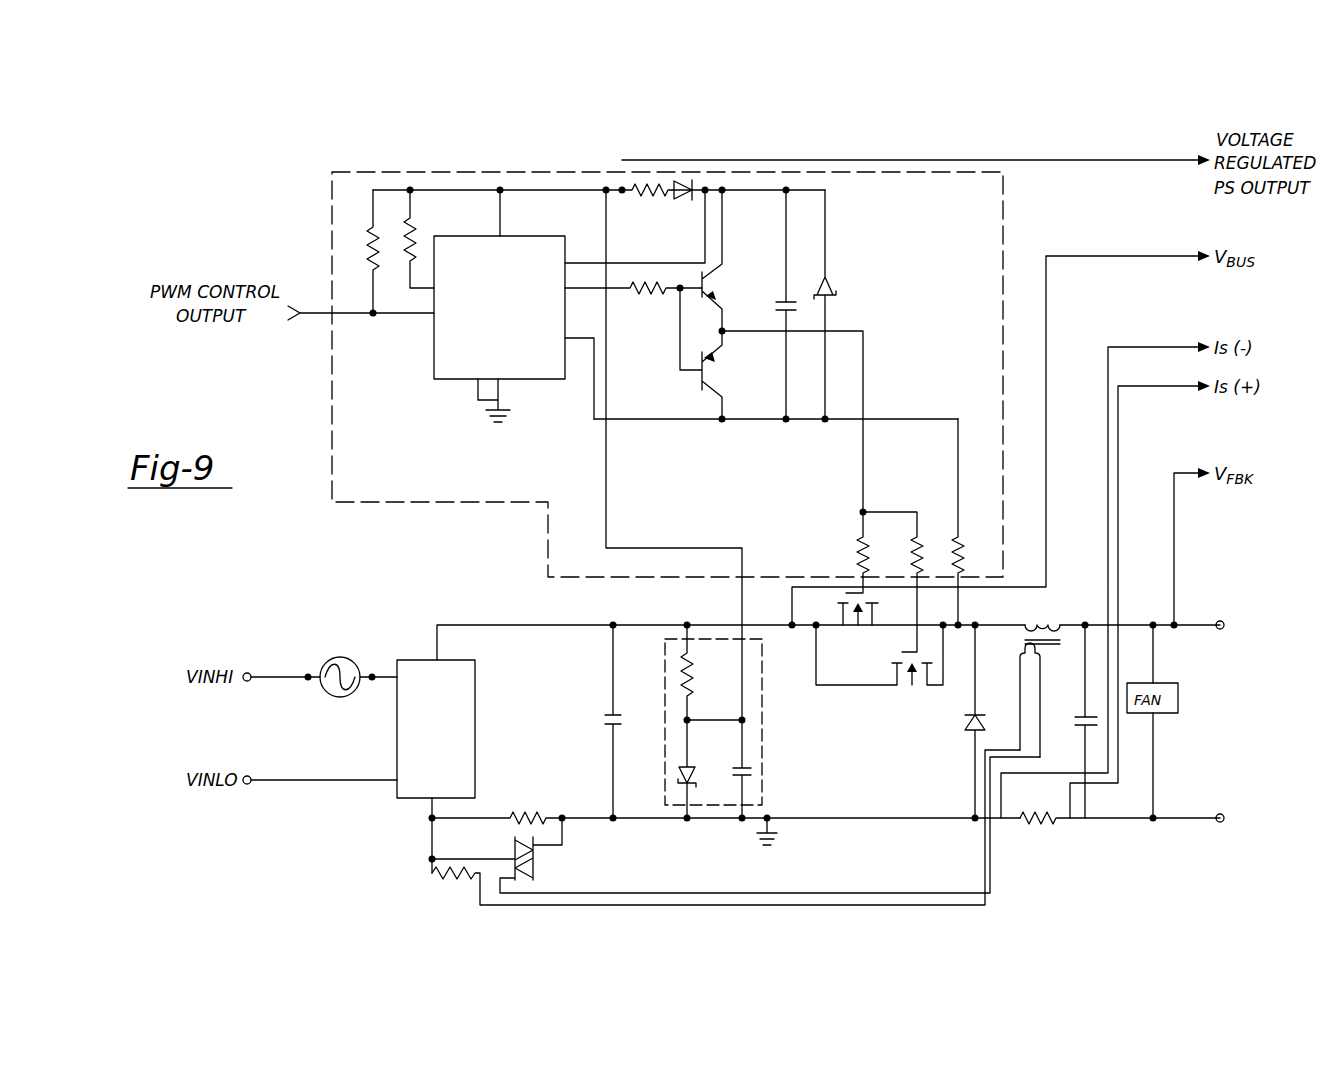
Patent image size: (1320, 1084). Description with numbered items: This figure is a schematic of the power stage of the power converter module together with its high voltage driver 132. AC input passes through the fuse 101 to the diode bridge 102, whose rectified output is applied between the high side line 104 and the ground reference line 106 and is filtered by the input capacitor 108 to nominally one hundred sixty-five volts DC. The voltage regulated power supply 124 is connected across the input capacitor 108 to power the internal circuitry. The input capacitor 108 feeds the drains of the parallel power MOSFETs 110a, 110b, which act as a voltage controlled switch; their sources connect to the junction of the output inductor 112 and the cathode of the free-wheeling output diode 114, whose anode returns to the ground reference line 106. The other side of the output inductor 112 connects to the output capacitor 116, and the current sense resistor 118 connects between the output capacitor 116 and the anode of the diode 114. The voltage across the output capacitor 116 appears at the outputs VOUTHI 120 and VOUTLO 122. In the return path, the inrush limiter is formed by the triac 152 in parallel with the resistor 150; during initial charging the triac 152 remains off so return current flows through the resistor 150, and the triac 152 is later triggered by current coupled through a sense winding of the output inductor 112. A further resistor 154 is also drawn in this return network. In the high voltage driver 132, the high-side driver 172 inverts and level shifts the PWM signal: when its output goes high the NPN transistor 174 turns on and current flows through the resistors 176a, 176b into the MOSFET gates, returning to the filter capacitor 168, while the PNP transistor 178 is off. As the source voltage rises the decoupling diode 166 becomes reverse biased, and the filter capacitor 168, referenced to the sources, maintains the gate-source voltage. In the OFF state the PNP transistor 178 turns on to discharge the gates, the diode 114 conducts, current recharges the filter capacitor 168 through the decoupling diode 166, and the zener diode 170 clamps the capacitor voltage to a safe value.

The fuse 101 is at (338, 657).
The diode bridge 102 is at (397, 796).
The high side line 104 is at (462, 624).
The ground reference line 106 is at (589, 818).
The input capacitor 108 is at (613, 716).
The power MOSFET 110a is at (885, 627).
The power MOSFET 110b is at (928, 688).
The output inductor 112 is at (1064, 625).
The free-wheeling output diode 114 is at (970, 732).
The output capacitor 116 is at (1072, 730).
The current sense resistor 118 is at (1040, 820).
The VOUTHI 120 is at (1218, 632).
The VOUTLO 122 is at (1218, 825).
The voltage regulated power supply 124 is at (672, 805).
The high voltage driver 132 is at (377, 171).
The resistor 150 is at (548, 815).
The triac 152 is at (548, 842).
The resistor 154 is at (436, 875).
The decoupling diode 166 is at (693, 183).
The filter capacitor 168 is at (788, 298).
The zener diode 170 is at (836, 294).
The high-side driver 172 is at (434, 349).
The NPN transistor 174 is at (723, 257).
The resistor 176a is at (862, 540).
The resistor 176b is at (917, 537).
The PNP transistor 178 is at (726, 385).